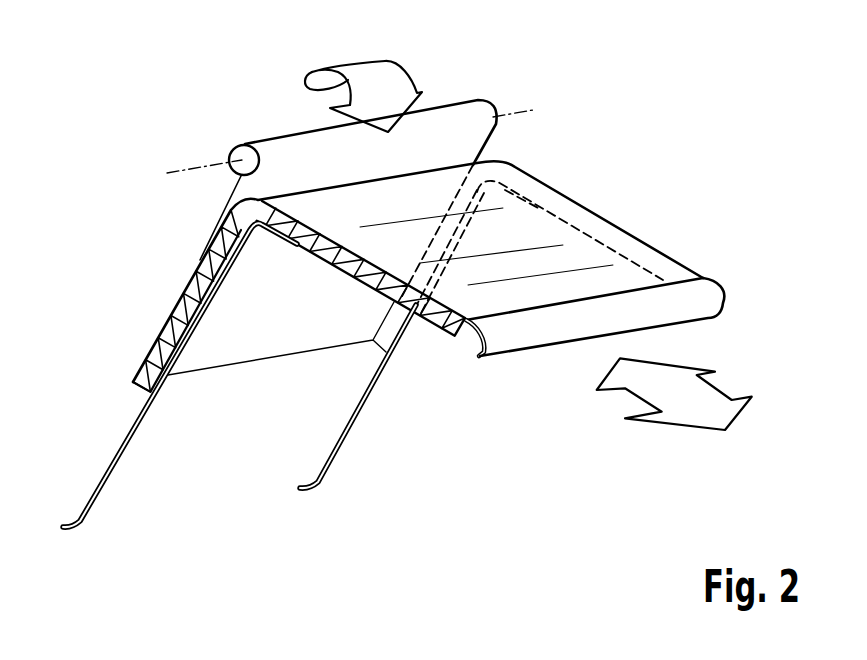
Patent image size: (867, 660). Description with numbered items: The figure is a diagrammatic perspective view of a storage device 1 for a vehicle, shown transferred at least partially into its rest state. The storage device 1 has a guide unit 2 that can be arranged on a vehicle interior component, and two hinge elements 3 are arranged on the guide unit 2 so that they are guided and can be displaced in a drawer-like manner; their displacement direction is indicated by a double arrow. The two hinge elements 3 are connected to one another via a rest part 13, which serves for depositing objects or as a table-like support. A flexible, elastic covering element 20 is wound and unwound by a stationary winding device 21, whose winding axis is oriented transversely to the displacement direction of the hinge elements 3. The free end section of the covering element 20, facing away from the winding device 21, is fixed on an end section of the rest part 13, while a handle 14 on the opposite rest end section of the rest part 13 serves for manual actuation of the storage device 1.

The storage device 1 is at (168, 112).
The guide unit 2 is at (122, 463).
The hinge element 3 is at (647, 228).
The rest part 13 is at (533, 231).
The handle 14 is at (707, 290).
The covering element 20 is at (484, 147).
The winding device 21 is at (233, 150).